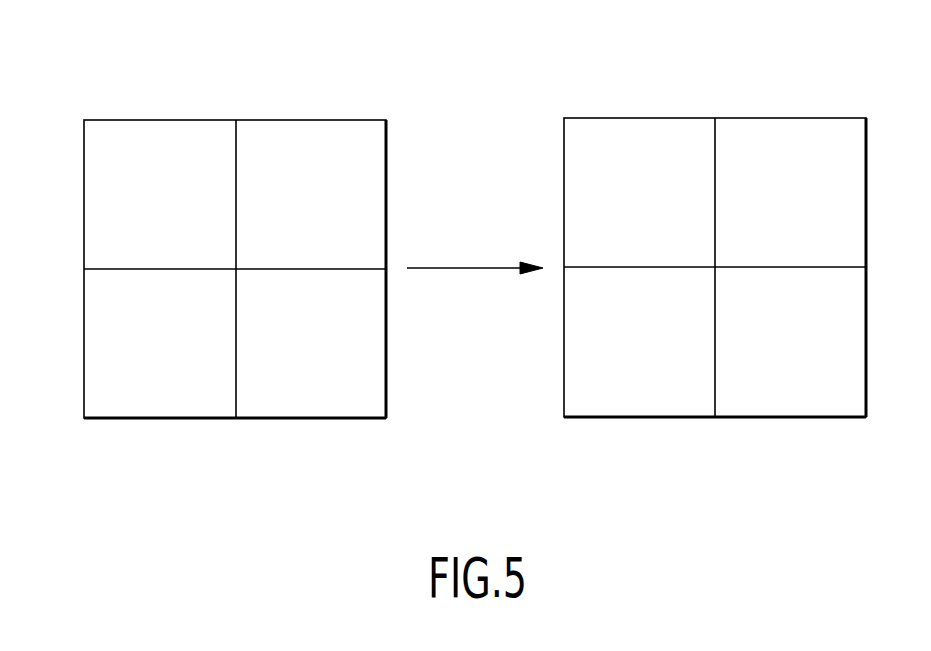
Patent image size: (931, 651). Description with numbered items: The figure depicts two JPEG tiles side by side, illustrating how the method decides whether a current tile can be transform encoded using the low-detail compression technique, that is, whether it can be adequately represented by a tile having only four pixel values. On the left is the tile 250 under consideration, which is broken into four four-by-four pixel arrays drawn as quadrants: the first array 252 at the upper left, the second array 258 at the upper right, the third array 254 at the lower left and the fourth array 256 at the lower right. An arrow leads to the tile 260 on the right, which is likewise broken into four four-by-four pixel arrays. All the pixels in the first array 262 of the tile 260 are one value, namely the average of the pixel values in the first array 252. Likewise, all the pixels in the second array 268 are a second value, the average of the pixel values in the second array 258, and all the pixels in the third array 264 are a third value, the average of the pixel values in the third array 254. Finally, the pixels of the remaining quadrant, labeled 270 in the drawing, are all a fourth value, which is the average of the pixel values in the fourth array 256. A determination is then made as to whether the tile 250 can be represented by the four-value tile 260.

The tile 250 is at (130, 120).
The first array 252 is at (98, 206).
The third array 254 is at (133, 385).
The fourth array 256 is at (340, 384).
The second array 258 is at (338, 153).
The tile 260 is at (608, 118).
The first array 262 is at (578, 203).
The third array 264 is at (613, 383).
The second array 268 is at (817, 152).
The third quadrant of second matrix 270 is at (819, 383).